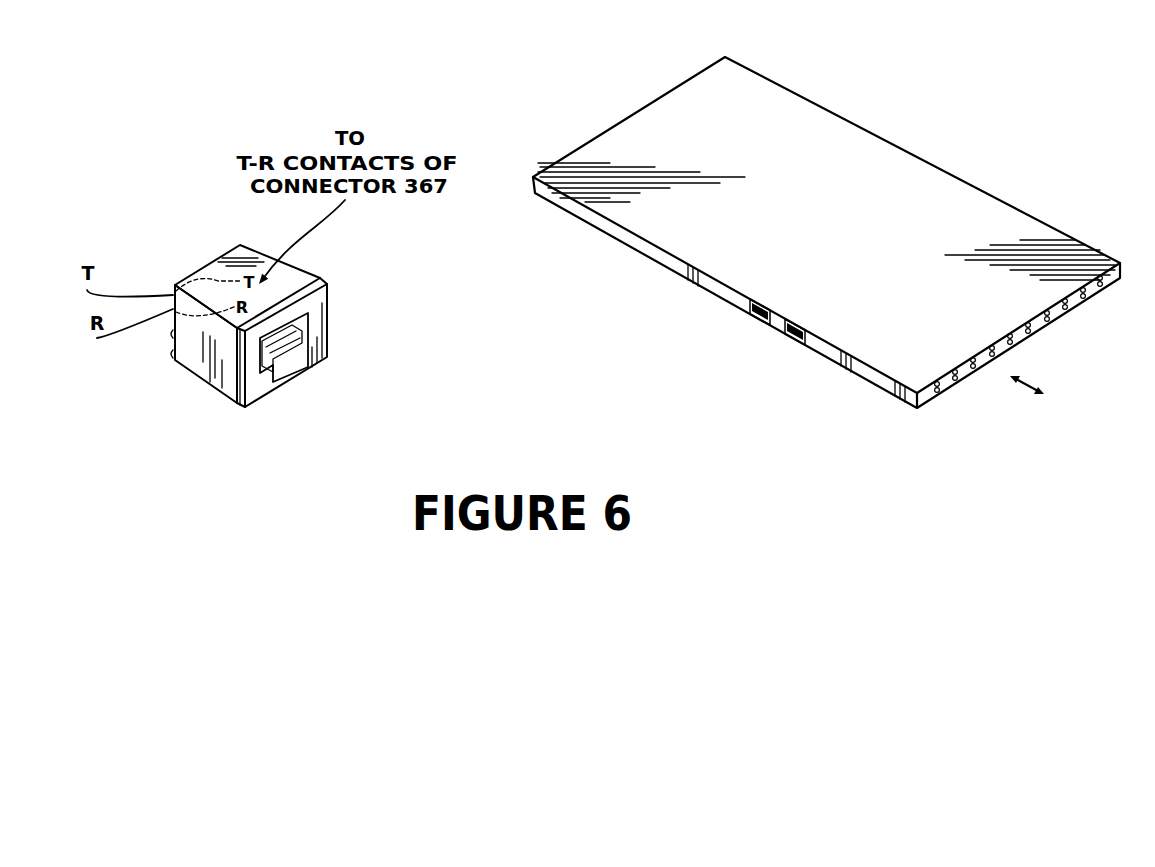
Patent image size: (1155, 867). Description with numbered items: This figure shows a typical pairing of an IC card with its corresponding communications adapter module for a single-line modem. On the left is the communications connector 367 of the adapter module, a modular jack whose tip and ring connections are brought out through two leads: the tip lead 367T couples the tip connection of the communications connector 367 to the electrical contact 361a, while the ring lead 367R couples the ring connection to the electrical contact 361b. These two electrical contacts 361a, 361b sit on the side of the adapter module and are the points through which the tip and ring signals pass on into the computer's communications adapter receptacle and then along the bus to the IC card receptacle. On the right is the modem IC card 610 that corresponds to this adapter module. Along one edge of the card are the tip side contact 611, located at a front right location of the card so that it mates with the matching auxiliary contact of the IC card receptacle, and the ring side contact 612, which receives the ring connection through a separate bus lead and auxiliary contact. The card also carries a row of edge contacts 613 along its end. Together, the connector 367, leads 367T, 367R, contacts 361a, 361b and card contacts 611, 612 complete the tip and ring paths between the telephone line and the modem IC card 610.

The communications connector 367 is at (302, 348).
The tip lead 367T is at (217, 303).
The ring lead 367R is at (218, 305).
The electrical contact 361a is at (173, 292).
The electrical contact 361b is at (173, 312).
The modem IC card 610 is at (800, 259).
The tip side contact 611 is at (792, 336).
The ring side contact 612 is at (762, 318).
The edge connector contacts of IC card 613 is at (1040, 324).